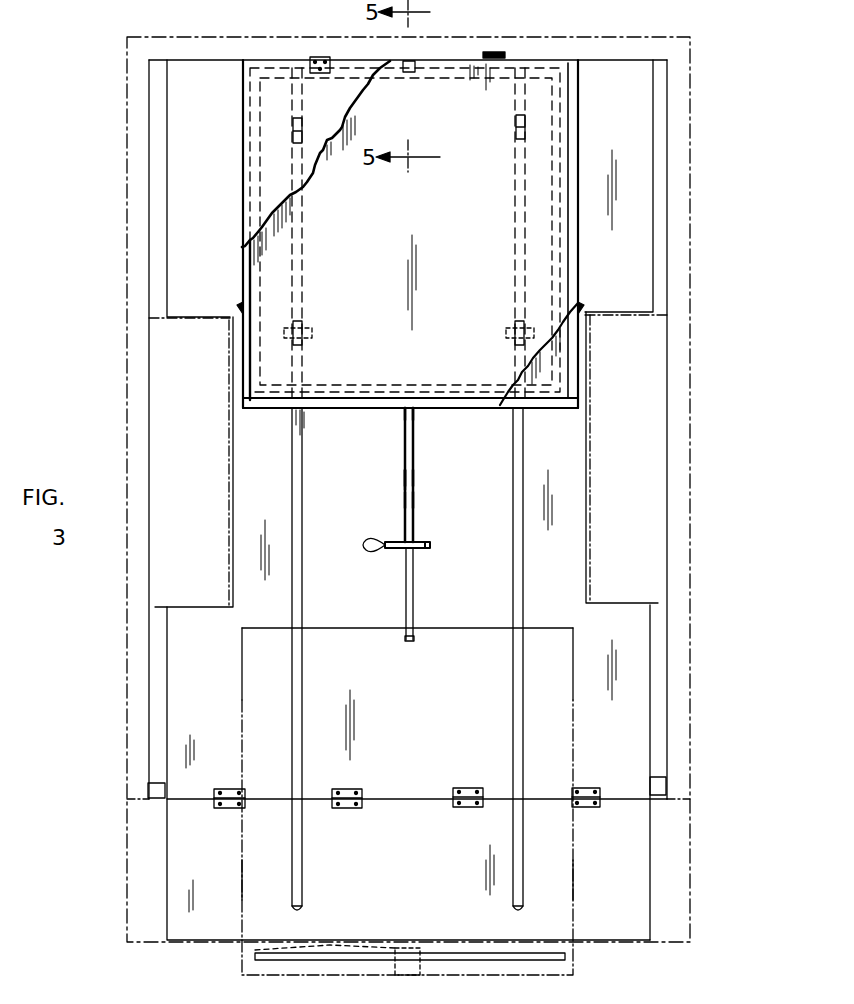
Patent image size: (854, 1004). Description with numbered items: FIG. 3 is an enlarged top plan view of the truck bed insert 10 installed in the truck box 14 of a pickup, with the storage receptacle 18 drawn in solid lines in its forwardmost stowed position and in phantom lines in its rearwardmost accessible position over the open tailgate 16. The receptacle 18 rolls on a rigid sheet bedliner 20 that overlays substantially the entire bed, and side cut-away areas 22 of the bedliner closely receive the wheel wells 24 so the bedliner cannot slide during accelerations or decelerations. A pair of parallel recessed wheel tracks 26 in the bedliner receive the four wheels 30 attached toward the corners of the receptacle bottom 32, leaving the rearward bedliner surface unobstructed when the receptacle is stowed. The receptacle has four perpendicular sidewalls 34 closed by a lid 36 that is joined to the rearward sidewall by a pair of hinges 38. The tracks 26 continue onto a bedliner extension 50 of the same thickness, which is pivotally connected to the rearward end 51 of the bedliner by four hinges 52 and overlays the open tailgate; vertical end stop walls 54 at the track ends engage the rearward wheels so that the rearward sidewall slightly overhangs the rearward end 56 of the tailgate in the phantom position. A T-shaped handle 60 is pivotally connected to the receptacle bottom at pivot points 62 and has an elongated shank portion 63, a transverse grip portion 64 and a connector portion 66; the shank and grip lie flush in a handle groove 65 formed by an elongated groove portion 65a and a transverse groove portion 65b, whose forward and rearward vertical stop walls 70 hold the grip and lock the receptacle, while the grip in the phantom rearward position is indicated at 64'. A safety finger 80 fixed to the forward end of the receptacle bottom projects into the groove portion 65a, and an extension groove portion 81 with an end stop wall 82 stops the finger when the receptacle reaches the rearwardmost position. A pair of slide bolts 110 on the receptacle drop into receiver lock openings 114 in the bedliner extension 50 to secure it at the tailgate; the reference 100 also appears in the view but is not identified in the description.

The truck bed insert 10 is at (417, 489).
The truck box 14 is at (127, 148).
The tailgate 16 is at (130, 884).
The receptacle 18 is at (232, 150).
The bedliner 20 is at (167, 716).
The side cut-away areas 22 is at (235, 590).
The wheel wells 24 is at (228, 478).
The wheel tracks 26 is at (302, 498).
The wheels 30 is at (288, 120).
The bottom 32 is at (420, 225).
The sidewalls 34 is at (250, 265).
The lid 36 is at (545, 386).
The hinges 38 is at (320, 57).
The bedliner extension 50 is at (652, 897).
The rearward end 51 is at (405, 799).
The hinges 52 is at (226, 810).
The end stop walls 54 is at (297, 912).
The rearward end 56 is at (636, 941).
The handle 60 is at (414, 478).
The pivot points 62 is at (250, 392).
The shank portion 63 is at (414, 500).
The grip portion 64 is at (425, 529).
The cross head (lower position) 64' is at (337, 974).
The handle groove 65 is at (414, 458).
The elongated groove portion 65a is at (405, 480).
The transverse groove portion 65b is at (430, 548).
The connector portion 66 is at (445, 410).
The stop walls 70 is at (364, 545).
The safety finger 80 is at (412, 60).
The extension groove portion 81 is at (405, 601).
The end stop wall 82 is at (408, 642).
The channel 100 is at (300, 60).
The slide bolts 110 is at (238, 308).
The receiver lock openings 114 is at (235, 882).